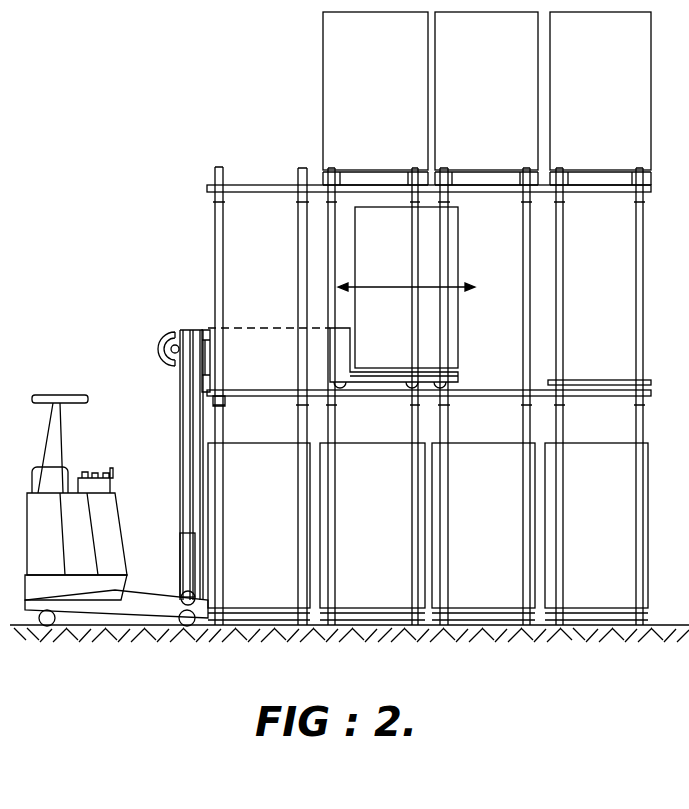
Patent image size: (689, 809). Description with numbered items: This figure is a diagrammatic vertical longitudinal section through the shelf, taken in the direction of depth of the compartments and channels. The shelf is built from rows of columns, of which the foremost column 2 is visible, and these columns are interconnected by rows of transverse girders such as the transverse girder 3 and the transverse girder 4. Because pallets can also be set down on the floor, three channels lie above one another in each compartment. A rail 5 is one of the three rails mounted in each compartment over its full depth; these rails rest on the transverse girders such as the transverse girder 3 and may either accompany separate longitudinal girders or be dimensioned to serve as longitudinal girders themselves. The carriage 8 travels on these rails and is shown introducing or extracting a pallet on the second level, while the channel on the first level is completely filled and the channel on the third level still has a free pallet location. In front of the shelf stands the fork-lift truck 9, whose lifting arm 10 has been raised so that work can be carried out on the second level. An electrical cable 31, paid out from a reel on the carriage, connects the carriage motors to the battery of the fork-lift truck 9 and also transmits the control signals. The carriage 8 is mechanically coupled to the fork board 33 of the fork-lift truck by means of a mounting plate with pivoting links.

The column 2 is at (214, 259).
The transverse girder 3 is at (222, 400).
The transverse girder 4 is at (216, 194).
The rail 5 is at (486, 390).
The carriage 8 is at (330, 372).
The fork-lift truck 9 is at (128, 526).
The lifting arm 10 is at (190, 445).
The electrical cable 31 is at (240, 328).
The fork board 33 is at (206, 360).